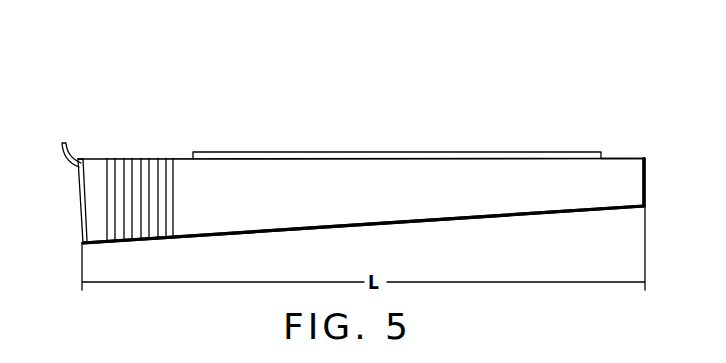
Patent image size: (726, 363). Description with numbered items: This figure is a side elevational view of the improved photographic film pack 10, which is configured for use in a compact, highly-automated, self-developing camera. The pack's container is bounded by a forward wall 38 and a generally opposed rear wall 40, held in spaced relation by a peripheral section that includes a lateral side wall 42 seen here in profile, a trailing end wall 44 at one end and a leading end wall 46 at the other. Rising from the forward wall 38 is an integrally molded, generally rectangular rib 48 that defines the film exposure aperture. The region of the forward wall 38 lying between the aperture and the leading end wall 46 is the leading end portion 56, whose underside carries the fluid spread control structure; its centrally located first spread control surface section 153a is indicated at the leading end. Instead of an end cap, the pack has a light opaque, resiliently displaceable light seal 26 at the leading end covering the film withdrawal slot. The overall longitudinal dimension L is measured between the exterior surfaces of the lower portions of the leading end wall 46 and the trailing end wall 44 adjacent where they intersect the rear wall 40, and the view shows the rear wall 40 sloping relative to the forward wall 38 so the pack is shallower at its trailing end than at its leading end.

The photographic film pack 10 is at (457, 149).
The light seal 26 is at (62, 158).
The first spread control surface section 153a is at (80, 158).
The leading end portion 56 is at (181, 157).
The rib 48 is at (217, 152).
The forward wall 38 is at (617, 158).
The trailing end wall 44 is at (648, 175).
The leading end wall 46 is at (78, 200).
The rear wall 40 is at (213, 236).
The lateral side wall 42 is at (465, 212).